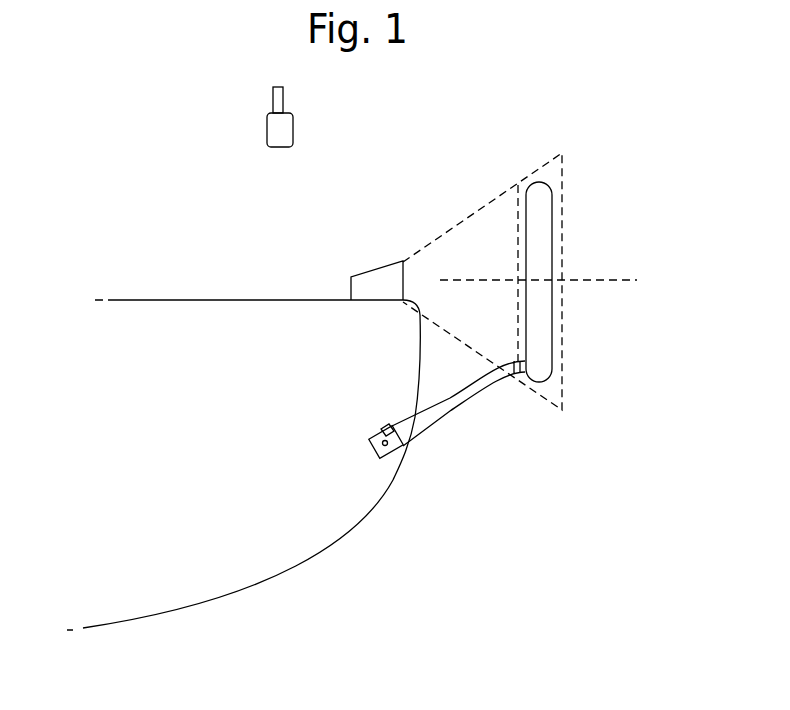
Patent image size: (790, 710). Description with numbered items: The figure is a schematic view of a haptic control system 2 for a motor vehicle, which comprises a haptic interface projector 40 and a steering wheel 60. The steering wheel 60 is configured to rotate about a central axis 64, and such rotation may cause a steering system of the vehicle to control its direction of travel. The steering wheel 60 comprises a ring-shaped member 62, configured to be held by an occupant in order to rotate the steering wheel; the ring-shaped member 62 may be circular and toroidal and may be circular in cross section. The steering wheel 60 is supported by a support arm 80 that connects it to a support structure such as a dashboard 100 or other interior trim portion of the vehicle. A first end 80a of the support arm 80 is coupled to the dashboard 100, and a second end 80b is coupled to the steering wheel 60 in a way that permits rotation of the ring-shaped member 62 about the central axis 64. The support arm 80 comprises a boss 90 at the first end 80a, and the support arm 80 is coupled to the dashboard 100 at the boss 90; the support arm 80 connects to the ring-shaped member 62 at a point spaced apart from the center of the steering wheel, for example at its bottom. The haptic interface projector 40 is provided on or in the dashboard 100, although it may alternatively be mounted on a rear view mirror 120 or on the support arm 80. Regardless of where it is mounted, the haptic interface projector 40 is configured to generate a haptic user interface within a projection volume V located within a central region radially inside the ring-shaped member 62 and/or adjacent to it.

The haptic control system 2 is at (115, 170).
The dashboard 100 is at (348, 537).
The rear view mirror 120 is at (265, 127).
The haptic interface projector 40 is at (377, 276).
The steering wheel 60 is at (483, 177).
The projection volume V is at (553, 160).
The ring-shaped member 62 is at (552, 203).
The central axis 64 is at (623, 280).
The support arm 80 is at (430, 423).
The first end 80a is at (383, 427).
The second end 80b is at (513, 375).
The boss 90 is at (378, 447).